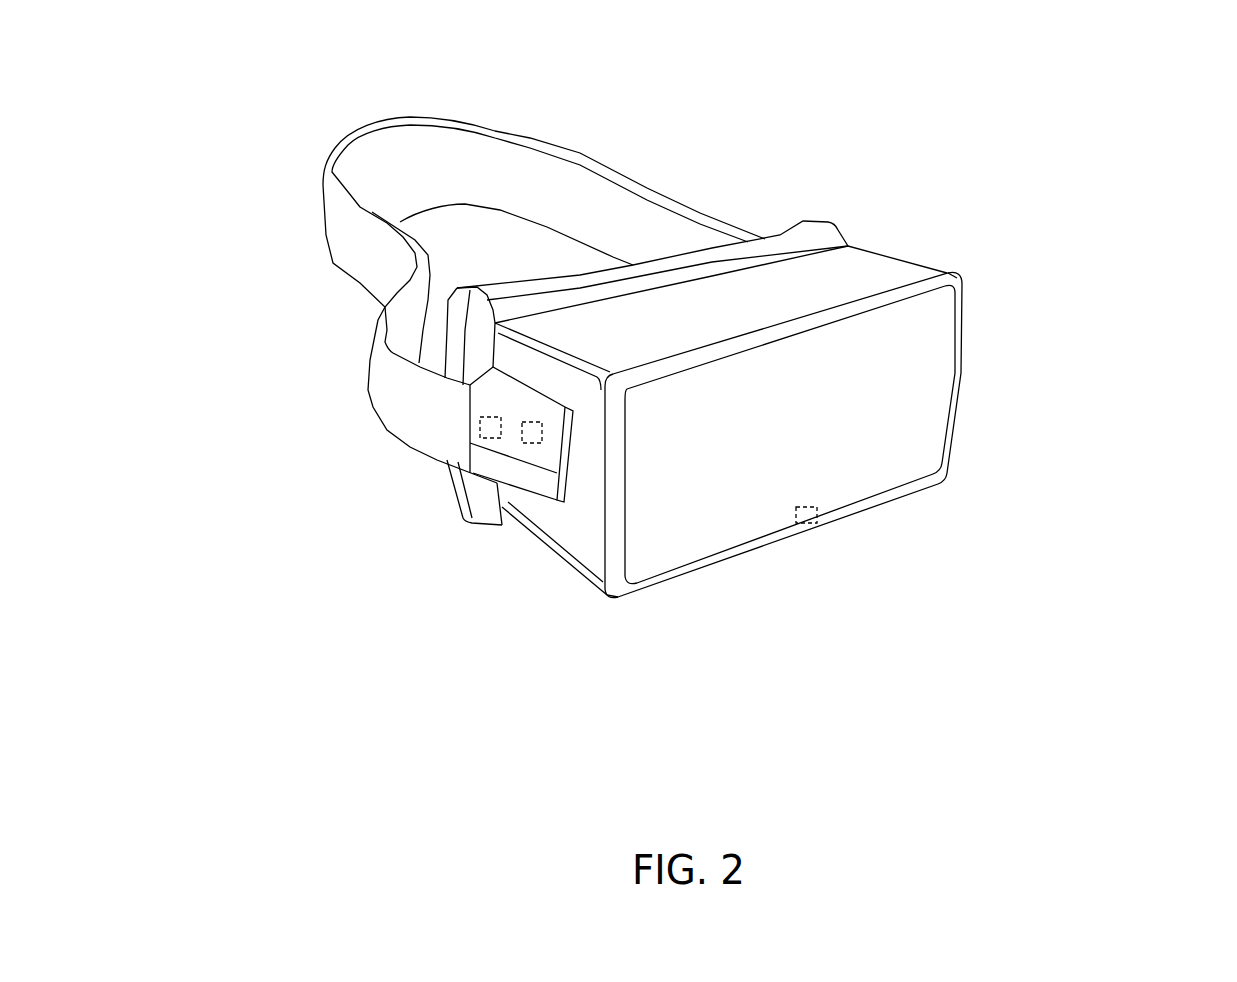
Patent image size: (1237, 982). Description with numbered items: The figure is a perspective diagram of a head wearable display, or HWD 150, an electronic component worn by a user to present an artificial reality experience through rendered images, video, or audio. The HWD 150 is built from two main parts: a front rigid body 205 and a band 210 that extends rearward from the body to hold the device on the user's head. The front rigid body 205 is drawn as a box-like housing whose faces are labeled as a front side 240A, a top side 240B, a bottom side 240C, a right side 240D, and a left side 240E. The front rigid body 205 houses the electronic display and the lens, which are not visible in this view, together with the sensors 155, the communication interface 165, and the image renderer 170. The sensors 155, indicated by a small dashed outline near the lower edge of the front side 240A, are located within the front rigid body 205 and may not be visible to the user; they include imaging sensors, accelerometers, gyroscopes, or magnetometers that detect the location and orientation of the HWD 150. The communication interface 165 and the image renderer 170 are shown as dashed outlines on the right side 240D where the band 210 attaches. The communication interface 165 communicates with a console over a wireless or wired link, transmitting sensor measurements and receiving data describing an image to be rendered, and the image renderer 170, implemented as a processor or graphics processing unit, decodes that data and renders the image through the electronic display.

The head wearable display 150 is at (291, 58).
The band 210 is at (650, 183).
The front rigid body 205 is at (957, 278).
The front side 240A is at (876, 468).
The top side 240B is at (563, 322).
The bottom side 240C is at (528, 571).
The right side 240D is at (576, 534).
The left side 240E is at (934, 248).
The sensors 155 is at (810, 530).
The communication interface 165 is at (468, 422).
The image renderer 170 is at (508, 454).